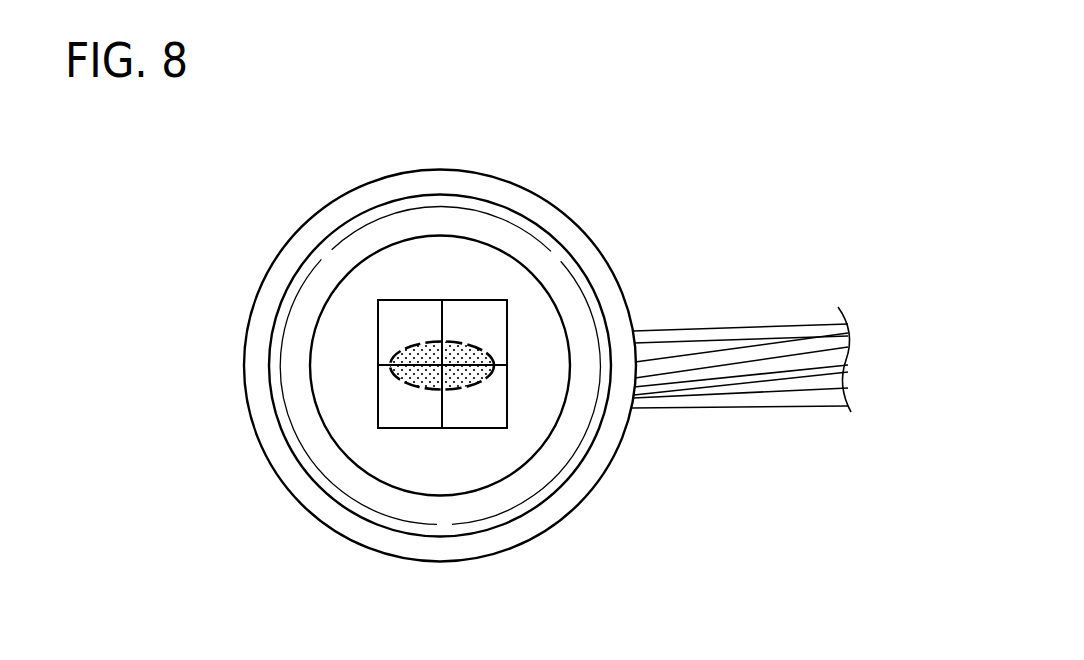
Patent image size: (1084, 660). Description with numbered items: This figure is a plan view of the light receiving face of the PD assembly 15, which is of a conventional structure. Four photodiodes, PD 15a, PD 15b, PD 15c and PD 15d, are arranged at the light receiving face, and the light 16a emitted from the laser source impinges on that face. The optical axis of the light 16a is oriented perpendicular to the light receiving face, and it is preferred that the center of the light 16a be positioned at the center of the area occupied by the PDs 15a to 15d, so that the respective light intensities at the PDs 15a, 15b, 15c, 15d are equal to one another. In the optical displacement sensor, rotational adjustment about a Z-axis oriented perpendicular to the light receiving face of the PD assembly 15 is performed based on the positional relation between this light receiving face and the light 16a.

The PD assembly 15 is at (247, 249).
The PD 15a is at (467, 320).
The PD 15b is at (415, 316).
The PD 15c is at (412, 413).
The PD 15d is at (475, 413).
The light 16a is at (467, 358).